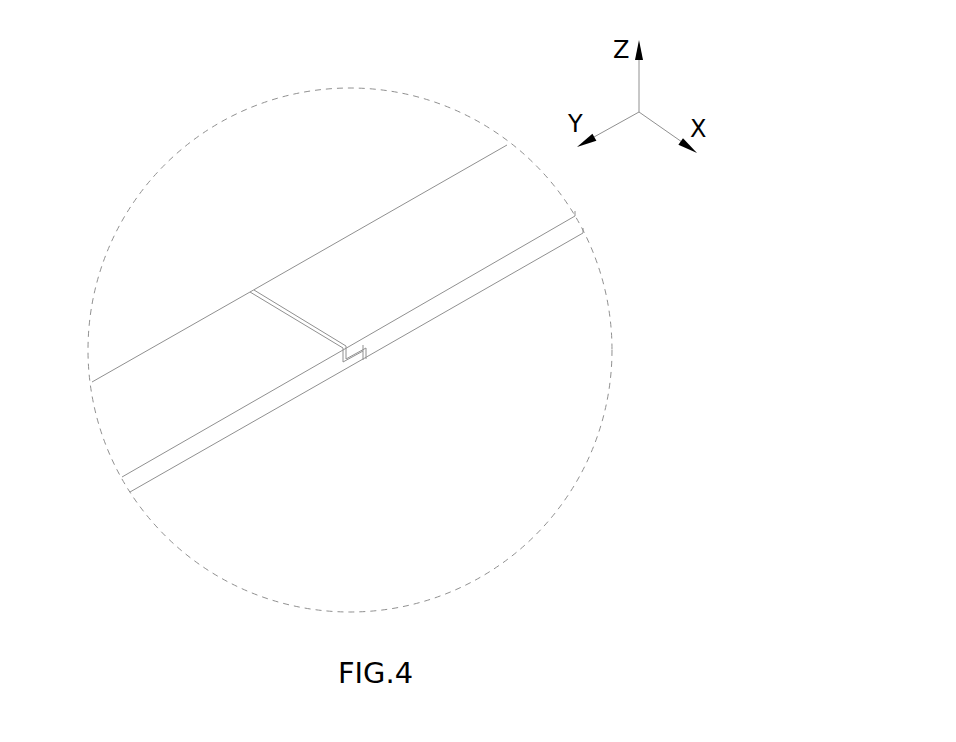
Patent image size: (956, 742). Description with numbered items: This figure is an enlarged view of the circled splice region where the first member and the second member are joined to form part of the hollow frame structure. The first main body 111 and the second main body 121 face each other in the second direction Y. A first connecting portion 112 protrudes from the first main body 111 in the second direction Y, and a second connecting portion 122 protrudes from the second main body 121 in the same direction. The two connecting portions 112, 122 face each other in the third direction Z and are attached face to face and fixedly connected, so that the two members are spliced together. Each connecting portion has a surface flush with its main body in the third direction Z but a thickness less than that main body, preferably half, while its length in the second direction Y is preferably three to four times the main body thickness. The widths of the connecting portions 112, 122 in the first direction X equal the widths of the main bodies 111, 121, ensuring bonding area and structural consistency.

The first main body 111 is at (228, 428).
The first connecting portion 112 is at (355, 357).
The second main body 121 is at (483, 277).
The second connecting portion 122 is at (363, 352).